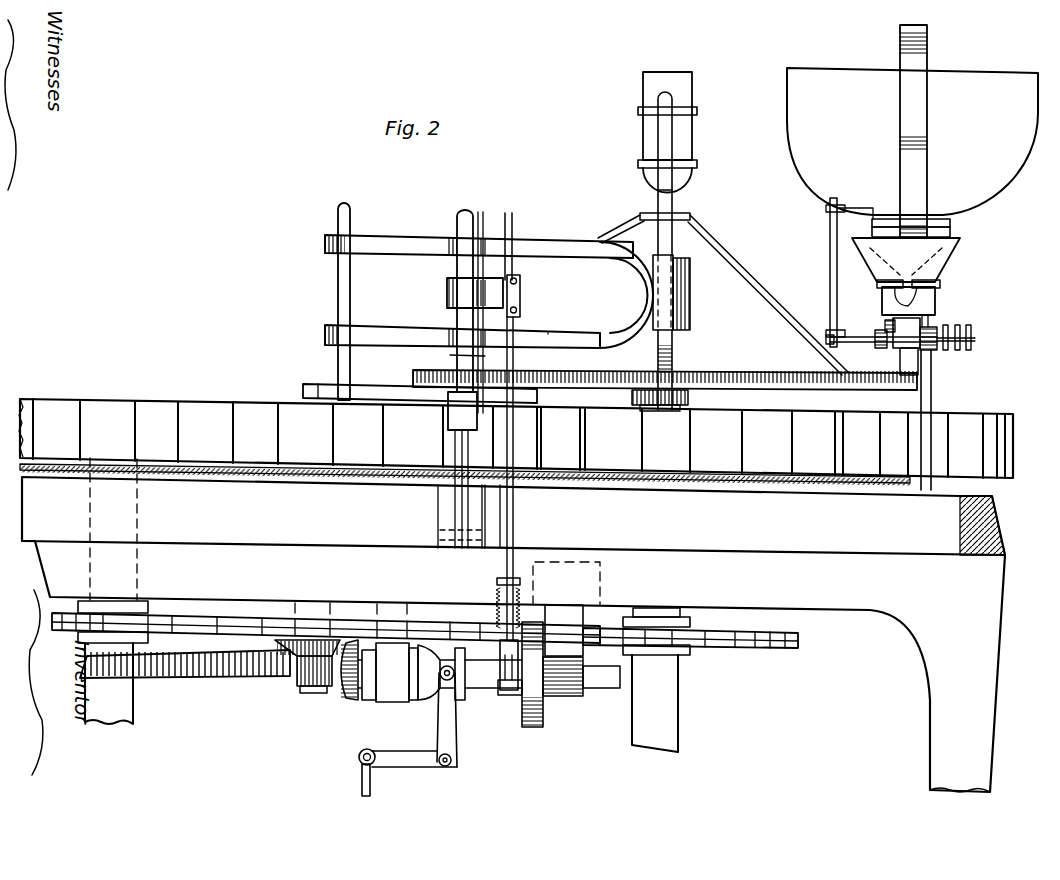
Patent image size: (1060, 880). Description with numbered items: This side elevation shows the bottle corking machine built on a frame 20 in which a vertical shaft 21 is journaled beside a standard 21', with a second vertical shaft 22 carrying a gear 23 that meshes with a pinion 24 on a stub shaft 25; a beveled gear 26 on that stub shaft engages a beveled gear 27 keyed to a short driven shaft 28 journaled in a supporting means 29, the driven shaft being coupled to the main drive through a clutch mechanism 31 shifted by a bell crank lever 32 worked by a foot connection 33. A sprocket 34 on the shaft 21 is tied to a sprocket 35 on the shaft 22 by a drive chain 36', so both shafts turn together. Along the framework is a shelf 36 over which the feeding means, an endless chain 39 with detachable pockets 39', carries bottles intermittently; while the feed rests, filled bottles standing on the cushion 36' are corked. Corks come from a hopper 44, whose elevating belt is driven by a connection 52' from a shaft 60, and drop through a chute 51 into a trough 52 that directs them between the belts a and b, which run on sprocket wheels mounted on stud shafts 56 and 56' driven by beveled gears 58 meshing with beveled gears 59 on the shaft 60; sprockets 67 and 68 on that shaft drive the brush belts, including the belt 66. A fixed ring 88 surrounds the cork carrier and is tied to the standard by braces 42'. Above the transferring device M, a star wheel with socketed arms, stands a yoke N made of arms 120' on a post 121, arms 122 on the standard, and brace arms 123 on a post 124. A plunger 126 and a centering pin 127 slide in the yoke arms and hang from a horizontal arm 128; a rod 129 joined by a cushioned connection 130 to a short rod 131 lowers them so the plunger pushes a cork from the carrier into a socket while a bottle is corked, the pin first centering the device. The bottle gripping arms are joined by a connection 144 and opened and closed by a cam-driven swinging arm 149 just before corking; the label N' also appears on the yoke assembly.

The frame 20 is at (513, 625).
The vertical shaft 21 is at (682, 300).
The standard 21' is at (635, 139).
The vertical shaft 22 is at (120, 710).
The gear 23 is at (230, 678).
The pinion 24 is at (292, 688).
The stub shaft 25 is at (312, 694).
The beveled gear 26 is at (275, 647).
The beveled gear 27 is at (346, 700).
The driven shaft 28 is at (368, 702).
The supporting means 29 is at (392, 704).
The clutch mechanism 31 is at (417, 702).
The bell crank lever 32 is at (415, 768).
The foot connection 33 is at (362, 782).
The sprocket 34 is at (755, 650).
The sprocket 35 is at (148, 606).
The shelf 36 is at (625, 443).
The drive chain / cushion 36' is at (326, 607).
The endless chain feeding means 39 is at (523, 434).
The pockets 39' is at (519, 424).
The braces 42' is at (722, 290).
The hopper 44 is at (912, 152).
The chute 51 is at (900, 178).
The trough 52 is at (924, 259).
The connection 52' is at (828, 272).
The stud shaft 56 is at (924, 331).
The stud shaft 56' is at (870, 319).
The beveled gears 58 is at (940, 330).
The beveled gears 59 is at (874, 346).
The shaft 60 is at (974, 340).
The belt 66 is at (692, 138).
The sprocket 67 is at (946, 352).
The sprocket 68 is at (958, 352).
The fixed ring 88 is at (787, 378).
The arms 120' is at (400, 281).
The post 121 is at (450, 355).
The arms 122 is at (648, 282).
The brace arms 123 is at (362, 325).
The post 124 is at (338, 292).
The plunger 126 is at (513, 223).
The centering pin 127 is at (484, 220).
The horizontal arm 128 is at (520, 282).
The rod 129 is at (514, 508).
The cushioned connection 130 is at (497, 586).
The short rod 131 is at (497, 672).
The connection 144 is at (450, 408).
The swinging arm 149 is at (458, 492).
The transferring device M is at (378, 394).
The yoke N is at (479, 233).
The arm N' is at (555, 321).
The belt a is at (876, 284).
The belt b is at (940, 284).